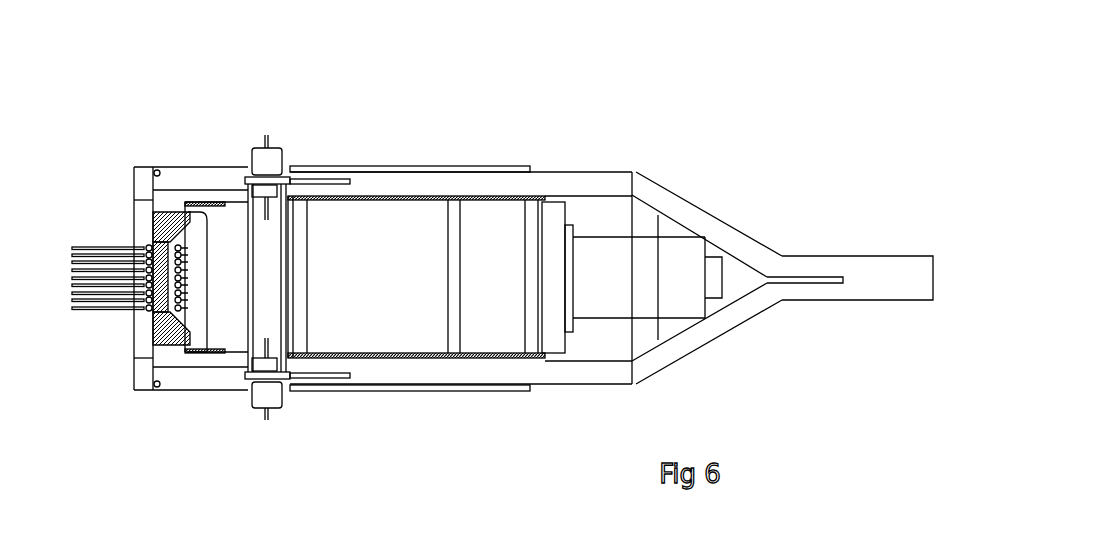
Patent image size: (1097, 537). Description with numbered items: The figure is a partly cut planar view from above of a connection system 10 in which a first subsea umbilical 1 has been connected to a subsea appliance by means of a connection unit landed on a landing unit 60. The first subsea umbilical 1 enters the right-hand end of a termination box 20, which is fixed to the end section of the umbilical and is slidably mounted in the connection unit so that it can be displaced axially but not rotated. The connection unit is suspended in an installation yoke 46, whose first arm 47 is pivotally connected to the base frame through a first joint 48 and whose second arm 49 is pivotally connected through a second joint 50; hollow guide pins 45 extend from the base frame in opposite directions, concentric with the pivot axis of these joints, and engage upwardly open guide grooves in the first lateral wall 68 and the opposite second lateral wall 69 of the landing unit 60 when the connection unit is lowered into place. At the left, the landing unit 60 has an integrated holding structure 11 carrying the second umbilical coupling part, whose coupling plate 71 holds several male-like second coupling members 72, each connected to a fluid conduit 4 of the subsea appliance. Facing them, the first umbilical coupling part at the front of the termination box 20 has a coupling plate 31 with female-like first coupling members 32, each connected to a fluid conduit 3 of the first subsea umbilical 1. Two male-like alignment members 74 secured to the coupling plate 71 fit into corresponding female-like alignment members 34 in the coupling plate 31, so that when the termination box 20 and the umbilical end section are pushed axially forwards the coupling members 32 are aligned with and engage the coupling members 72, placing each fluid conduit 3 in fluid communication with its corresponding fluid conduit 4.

The first subsea umbilical 1 is at (863, 258).
The fluid conduit 3 is at (192, 313).
The fluid conduit 4 is at (87, 312).
The connection system 10 is at (258, 95).
The holding structure 11 is at (152, 192).
The termination box 20 is at (483, 226).
The coupling plate 31 is at (182, 280).
The first coupling member 32 is at (190, 240).
The alignment member 34 is at (185, 230).
The guide pin 45 is at (283, 150).
The installation yoke 46 is at (700, 214).
The first arm 47 is at (568, 374).
The first joint 48 is at (288, 380).
The second arm 49 is at (557, 182).
The second joint 50 is at (291, 181).
The landing unit 60 is at (155, 163).
The first lateral wall 68 is at (430, 393).
The second lateral wall 69 is at (408, 164).
The coupling plate 71 is at (150, 318).
The second coupling member 72 is at (150, 243).
The alignment member 74 is at (160, 220).